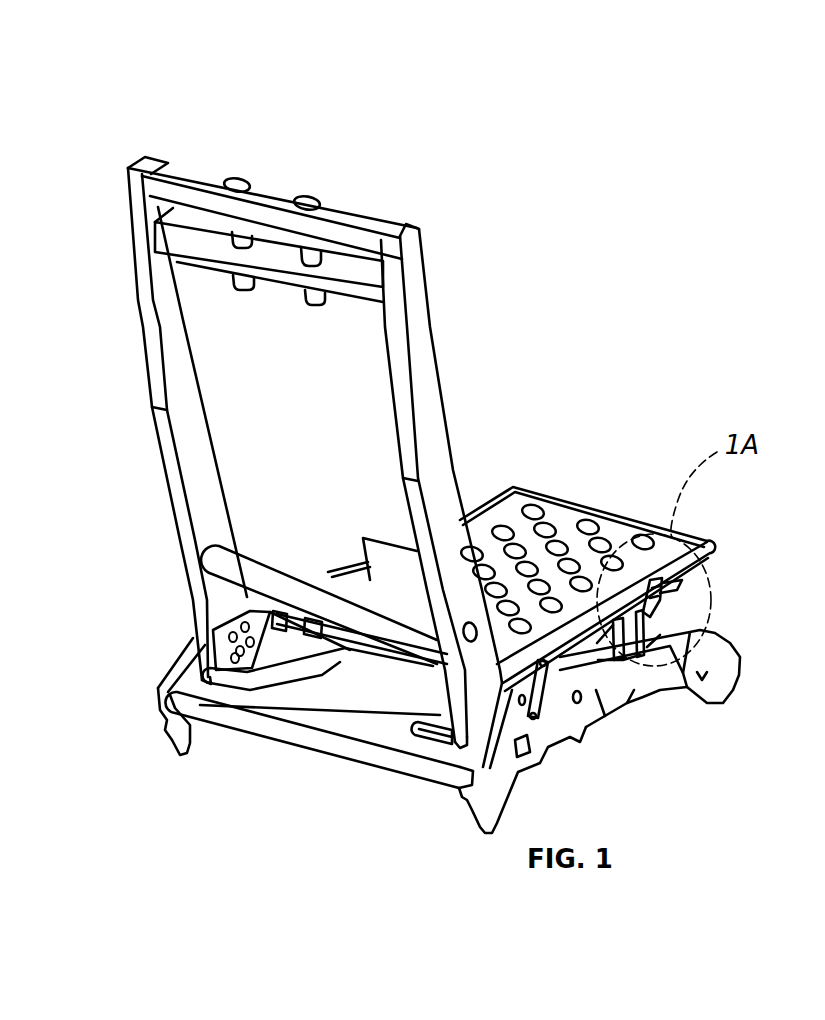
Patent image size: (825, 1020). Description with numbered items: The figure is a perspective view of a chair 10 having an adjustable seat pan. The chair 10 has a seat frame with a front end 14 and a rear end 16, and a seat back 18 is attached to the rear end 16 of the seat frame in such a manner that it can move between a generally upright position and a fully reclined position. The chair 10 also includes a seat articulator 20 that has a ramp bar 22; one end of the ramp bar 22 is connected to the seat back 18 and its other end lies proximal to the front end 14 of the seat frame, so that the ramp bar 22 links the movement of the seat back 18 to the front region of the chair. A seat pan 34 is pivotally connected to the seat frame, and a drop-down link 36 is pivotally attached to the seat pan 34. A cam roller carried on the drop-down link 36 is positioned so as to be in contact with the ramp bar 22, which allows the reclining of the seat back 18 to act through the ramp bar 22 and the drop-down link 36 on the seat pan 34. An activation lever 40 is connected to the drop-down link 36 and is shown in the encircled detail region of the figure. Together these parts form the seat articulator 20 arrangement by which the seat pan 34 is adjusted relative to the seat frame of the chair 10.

The chair 10 is at (403, 127).
The front end 14 is at (735, 678).
The rear end 16 is at (467, 799).
The seat back 18 is at (143, 318).
The seat articulator 20 is at (398, 732).
The ramp bar 22 is at (607, 698).
The seat pan 34 is at (560, 512).
The drop-down link 36 is at (711, 553).
The activation lever 40 is at (665, 595).